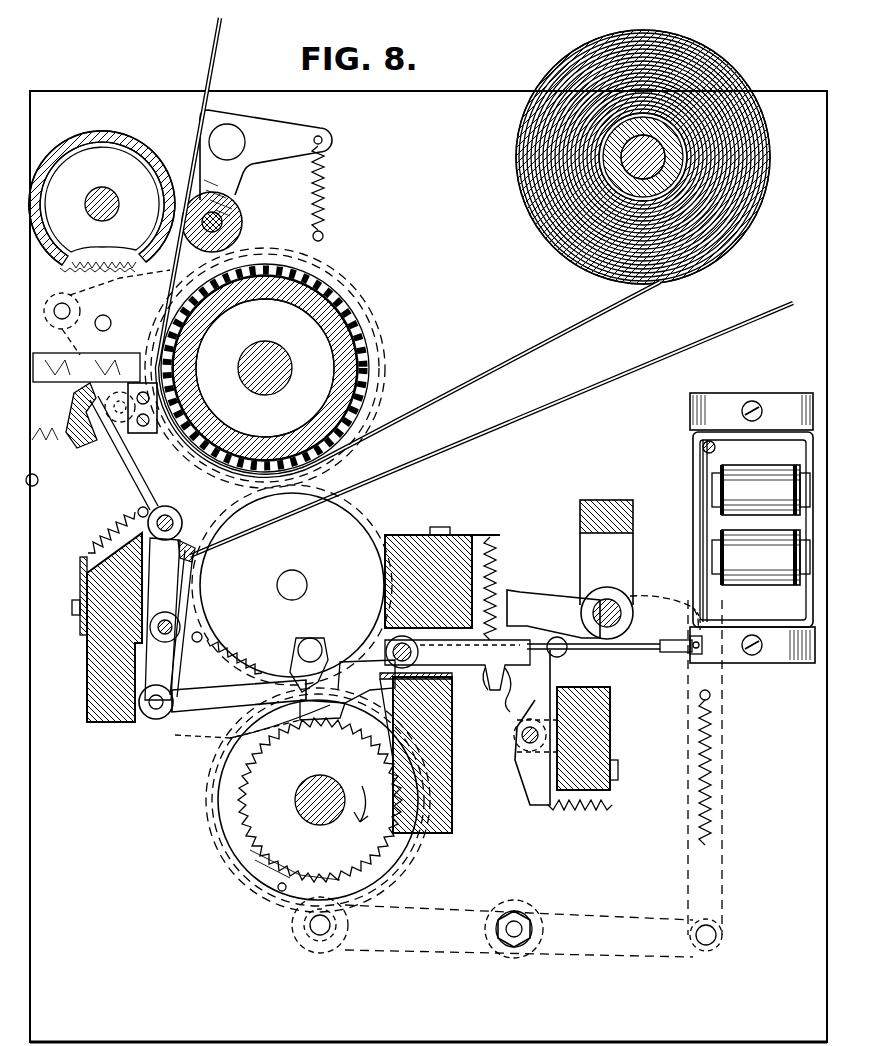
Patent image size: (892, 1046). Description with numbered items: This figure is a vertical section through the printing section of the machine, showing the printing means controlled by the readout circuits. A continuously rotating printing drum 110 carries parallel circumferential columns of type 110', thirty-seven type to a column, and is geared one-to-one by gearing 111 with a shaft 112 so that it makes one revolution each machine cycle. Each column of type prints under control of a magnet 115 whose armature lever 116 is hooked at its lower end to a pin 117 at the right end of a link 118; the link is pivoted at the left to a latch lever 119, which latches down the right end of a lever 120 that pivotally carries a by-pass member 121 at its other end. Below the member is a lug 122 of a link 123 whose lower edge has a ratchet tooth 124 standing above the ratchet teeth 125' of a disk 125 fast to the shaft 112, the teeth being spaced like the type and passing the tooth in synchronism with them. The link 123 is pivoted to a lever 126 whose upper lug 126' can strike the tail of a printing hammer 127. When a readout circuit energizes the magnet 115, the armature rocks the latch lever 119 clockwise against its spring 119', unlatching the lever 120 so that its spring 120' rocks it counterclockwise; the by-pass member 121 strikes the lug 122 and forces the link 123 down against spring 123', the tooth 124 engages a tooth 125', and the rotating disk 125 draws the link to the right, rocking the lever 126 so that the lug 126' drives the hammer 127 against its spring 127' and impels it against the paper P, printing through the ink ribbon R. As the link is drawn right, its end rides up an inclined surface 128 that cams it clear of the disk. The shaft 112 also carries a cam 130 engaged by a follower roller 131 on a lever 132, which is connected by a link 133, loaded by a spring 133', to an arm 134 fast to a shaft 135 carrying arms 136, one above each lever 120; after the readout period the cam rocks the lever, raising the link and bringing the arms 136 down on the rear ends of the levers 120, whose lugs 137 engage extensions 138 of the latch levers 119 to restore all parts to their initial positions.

The printing drum 110 is at (301, 368).
The type 110' is at (287, 367).
The gearing 111 is at (328, 478).
The shaft 112 is at (317, 803).
The magnet 115 is at (745, 470).
The armature lever 116 is at (700, 546).
The pin 117 is at (688, 654).
The link 118 is at (622, 648).
The latch lever 119 is at (520, 727).
The spring 119' is at (580, 768).
The lever 120 is at (457, 632).
The spring 120' is at (470, 583).
The by-pass member 121 is at (290, 656).
The lug 122 is at (232, 738).
The link 123 is at (222, 713).
The spring 123' is at (224, 657).
The ratchet tooth 124 is at (318, 724).
The disk 125 is at (252, 837).
The ratchet teeth 125' is at (251, 897).
The lever 126 is at (268, 592).
The lug 126' is at (205, 528).
The printing hammer 127 is at (92, 450).
The spring 127' is at (85, 573).
The inclined surface 128 is at (378, 742).
The cam 130 is at (283, 890).
The follower roller 131 is at (315, 946).
The lever 132 is at (585, 955).
The link 133 is at (569, 778).
The spring 133' is at (671, 767).
The arm 134 is at (660, 600).
The shaft 135 is at (607, 608).
The arms 136 is at (508, 600).
The lugs 137 is at (498, 676).
The extensions 138 is at (504, 694).
The paper P is at (170, 287).
The ink ribbon R is at (150, 376).